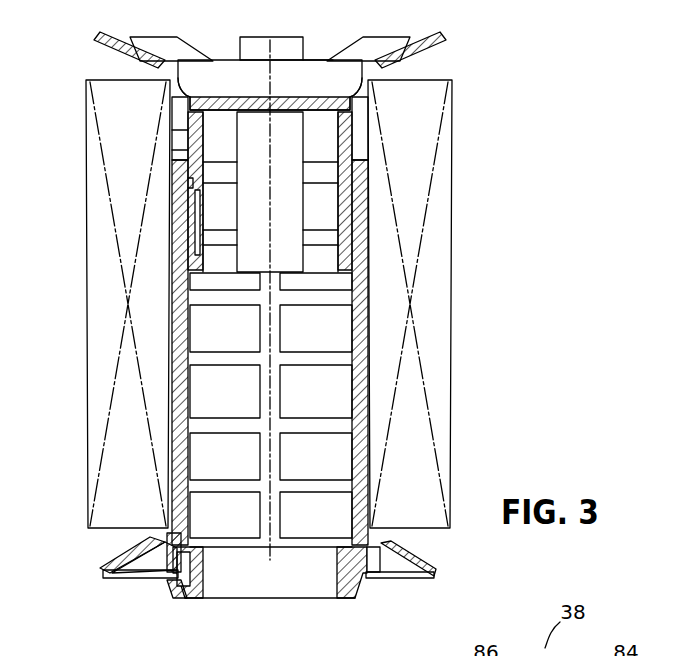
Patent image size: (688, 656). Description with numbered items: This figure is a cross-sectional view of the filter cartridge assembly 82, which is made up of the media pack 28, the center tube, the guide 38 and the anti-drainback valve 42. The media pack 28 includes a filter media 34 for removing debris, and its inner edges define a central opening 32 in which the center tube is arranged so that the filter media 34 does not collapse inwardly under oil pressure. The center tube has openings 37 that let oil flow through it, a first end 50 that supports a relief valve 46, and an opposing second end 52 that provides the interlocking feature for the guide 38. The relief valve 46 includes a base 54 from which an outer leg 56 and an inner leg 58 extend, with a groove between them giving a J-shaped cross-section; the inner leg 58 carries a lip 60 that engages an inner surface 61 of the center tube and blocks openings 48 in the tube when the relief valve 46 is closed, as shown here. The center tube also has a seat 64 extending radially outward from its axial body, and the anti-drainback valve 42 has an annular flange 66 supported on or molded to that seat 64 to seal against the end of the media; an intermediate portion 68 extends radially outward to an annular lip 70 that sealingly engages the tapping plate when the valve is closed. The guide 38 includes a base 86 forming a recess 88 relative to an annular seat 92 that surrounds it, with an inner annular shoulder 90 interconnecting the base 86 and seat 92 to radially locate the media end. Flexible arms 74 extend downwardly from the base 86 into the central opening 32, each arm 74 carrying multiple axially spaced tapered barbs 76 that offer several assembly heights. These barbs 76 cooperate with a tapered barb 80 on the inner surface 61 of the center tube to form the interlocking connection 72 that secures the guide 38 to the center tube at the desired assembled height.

The media pack 28 is at (464, 361).
The central opening 32 is at (232, 398).
The filter media 34 is at (394, 470).
The openings 37 is at (313, 320).
The guide 38 is at (315, 60).
The anti-drainback valve 42 is at (432, 550).
The relief valve 46 is at (224, 578).
The openings 48 is at (119, 561).
The first end 50 is at (350, 596).
The second end 52 is at (171, 172).
The base 54 is at (203, 584).
The outer leg 56 is at (173, 588).
The inner leg 58 is at (215, 571).
The lip 60 is at (364, 545).
The inner surface 61 is at (190, 534).
The seat 64 is at (385, 553).
The annular flange 66 is at (384, 543).
The intermediate portion 68 is at (124, 552).
The annular lip 70 is at (167, 577).
The interlocking connection 72 is at (380, 170).
The flexible arms 74 is at (197, 243).
The tapered barbs 76 is at (358, 158).
The tapered barb 80 is at (190, 182).
The filter cartridge assembly 82 is at (512, 88).
The base 86 is at (281, 108).
The recess 88 is at (228, 66).
The inner annular shoulder 90 is at (357, 83).
The annular seat 92 is at (392, 95).